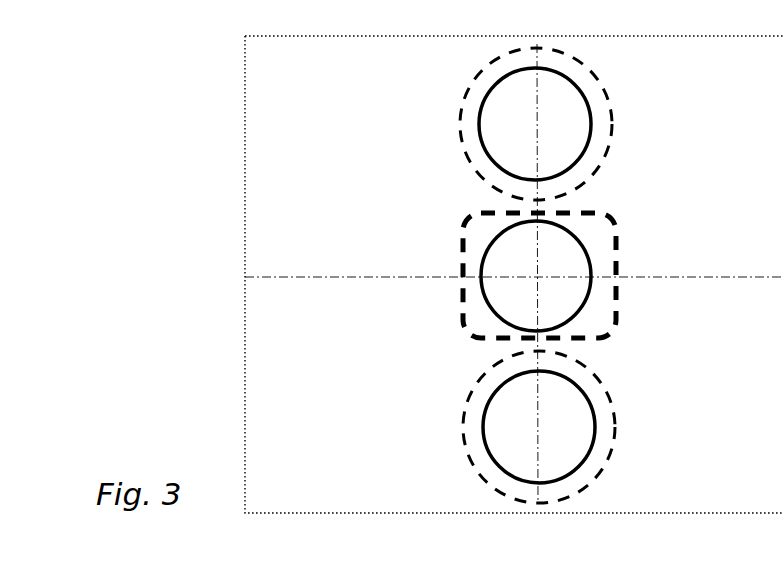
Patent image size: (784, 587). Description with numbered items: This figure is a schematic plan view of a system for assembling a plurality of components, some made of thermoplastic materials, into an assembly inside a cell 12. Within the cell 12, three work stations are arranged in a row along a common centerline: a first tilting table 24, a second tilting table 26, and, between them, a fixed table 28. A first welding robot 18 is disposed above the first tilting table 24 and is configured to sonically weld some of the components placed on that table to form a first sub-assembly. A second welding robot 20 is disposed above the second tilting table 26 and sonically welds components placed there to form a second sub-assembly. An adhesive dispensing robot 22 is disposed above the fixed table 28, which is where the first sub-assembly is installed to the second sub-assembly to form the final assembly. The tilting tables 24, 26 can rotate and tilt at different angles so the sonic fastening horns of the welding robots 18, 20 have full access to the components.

The cell 12 is at (244, 195).
The first welding robot 18 is at (612, 123).
The second welding robot 20 is at (617, 429).
The adhesive dispensing robot 22 is at (608, 210).
The first tilting table 24 is at (479, 122).
The second tilting table 26 is at (488, 427).
The fixed table 28 is at (484, 277).